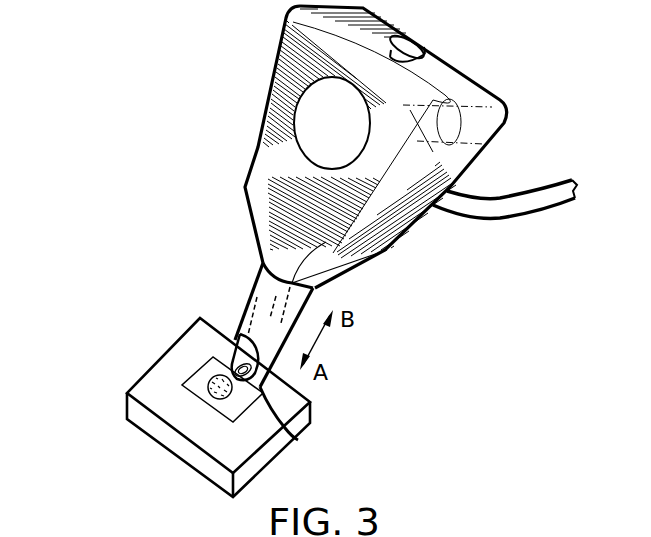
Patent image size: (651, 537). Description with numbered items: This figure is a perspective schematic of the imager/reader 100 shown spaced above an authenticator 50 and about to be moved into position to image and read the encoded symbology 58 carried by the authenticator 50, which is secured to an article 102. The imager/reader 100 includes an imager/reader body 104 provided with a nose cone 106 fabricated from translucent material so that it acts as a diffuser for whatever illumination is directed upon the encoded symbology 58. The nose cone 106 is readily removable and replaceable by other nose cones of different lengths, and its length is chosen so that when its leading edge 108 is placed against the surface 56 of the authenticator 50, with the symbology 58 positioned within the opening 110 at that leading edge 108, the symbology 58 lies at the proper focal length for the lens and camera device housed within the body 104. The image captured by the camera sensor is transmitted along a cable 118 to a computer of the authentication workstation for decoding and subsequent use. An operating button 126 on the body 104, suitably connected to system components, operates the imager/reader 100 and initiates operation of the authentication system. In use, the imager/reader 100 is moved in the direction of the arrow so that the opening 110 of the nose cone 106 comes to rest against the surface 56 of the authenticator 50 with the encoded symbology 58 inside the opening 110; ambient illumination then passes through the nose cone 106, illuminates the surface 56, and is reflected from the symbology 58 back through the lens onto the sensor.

The imager/reader 100 is at (506, 103).
The imager/reader body 104 is at (276, 155).
The operating button 126 is at (417, 38).
The cable 118 is at (513, 203).
The nose cone 106 is at (252, 291).
The opening 110 is at (240, 327).
The authenticator 50 is at (133, 428).
The surface 56 is at (153, 393).
The encoded symbology 58 is at (217, 398).
The article 102 is at (173, 347).
The leading edge 108 is at (308, 403).